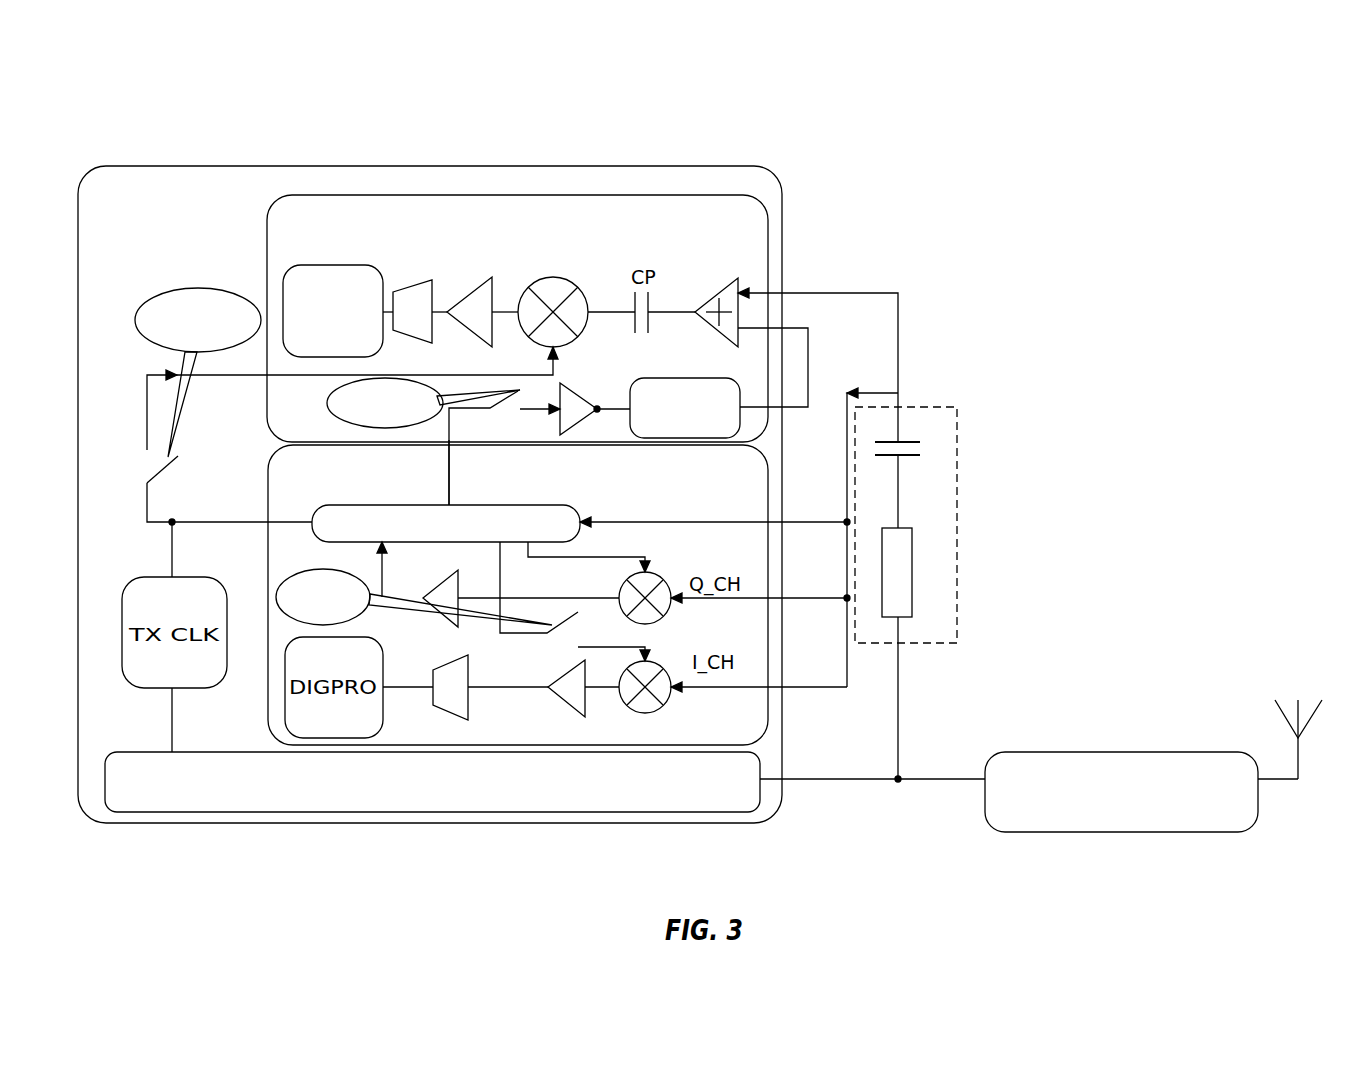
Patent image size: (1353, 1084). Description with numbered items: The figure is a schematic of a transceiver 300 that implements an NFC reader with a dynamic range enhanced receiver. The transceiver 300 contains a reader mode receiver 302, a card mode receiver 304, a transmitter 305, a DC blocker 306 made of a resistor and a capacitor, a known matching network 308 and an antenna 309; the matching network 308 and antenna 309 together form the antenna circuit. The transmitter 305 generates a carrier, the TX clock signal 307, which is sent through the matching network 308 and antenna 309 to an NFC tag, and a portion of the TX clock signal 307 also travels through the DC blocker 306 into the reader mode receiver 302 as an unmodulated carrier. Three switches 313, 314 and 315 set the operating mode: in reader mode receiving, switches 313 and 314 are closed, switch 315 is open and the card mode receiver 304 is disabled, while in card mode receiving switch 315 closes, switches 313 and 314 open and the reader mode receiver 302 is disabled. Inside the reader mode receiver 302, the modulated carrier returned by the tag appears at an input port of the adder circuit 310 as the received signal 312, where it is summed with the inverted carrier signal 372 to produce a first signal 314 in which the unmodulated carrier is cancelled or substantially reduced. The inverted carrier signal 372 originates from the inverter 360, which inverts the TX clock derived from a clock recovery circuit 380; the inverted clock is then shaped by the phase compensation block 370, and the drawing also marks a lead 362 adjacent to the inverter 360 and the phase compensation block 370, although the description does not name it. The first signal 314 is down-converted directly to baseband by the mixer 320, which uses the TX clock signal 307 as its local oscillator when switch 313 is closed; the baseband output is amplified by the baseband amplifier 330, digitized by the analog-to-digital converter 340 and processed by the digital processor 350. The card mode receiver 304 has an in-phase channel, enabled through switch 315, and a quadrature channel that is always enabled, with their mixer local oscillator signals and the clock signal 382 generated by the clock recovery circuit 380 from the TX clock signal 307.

The transceiver 300 is at (128, 130).
The reader mode (RM) receiver 302 is at (697, 195).
The card mode (CM) receiver 304 is at (268, 700).
The transmitter 305 is at (316, 812).
The DC blocker 306 is at (950, 407).
The TX clock signal 307 is at (510, 375).
The matching network 308 is at (1100, 752).
The antenna 309 is at (1298, 700).
The adder circuit 310 is at (745, 288).
The received signal 312 is at (898, 305).
The switch 313 is at (198, 372).
The first signal 314 is at (690, 365).
The switch 315 is at (427, 587).
The mixer 320 is at (570, 285).
The baseband amplifier 330 is at (484, 282).
The analog-to-digital converter 340 is at (412, 280).
The digital processor 350 is at (345, 265).
The inverter 360 is at (575, 442).
The compensation output 362 is at (628, 382).
The phase compensation block 370 is at (700, 442).
The inverted carrier signal 372 is at (808, 345).
The clock recovery circuit 380 is at (330, 505).
The clock signal 382 is at (452, 477).